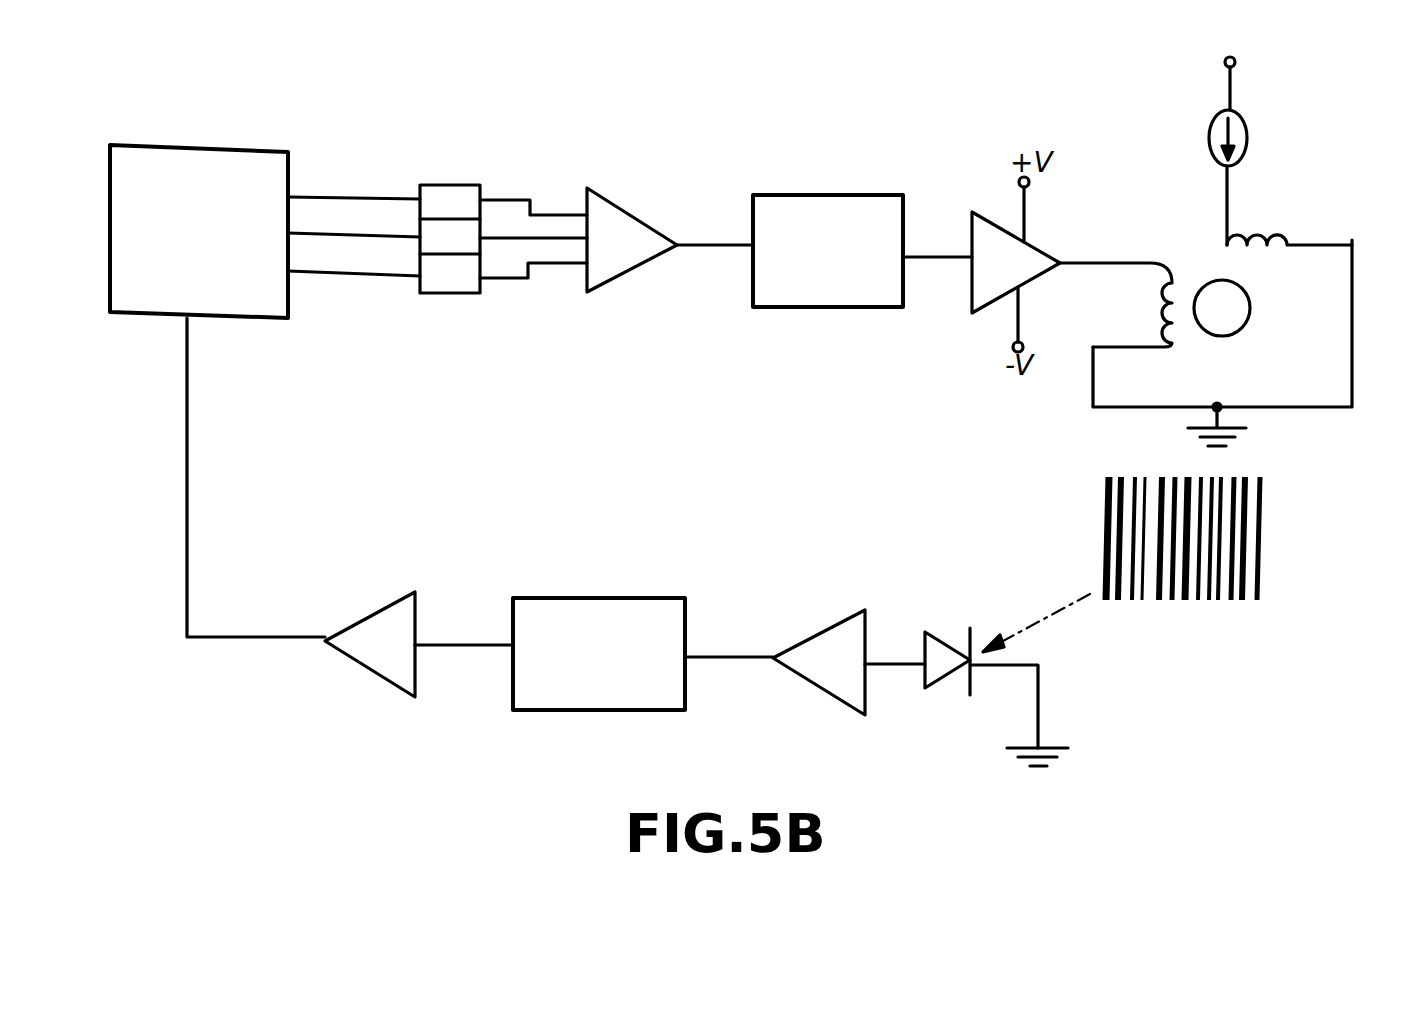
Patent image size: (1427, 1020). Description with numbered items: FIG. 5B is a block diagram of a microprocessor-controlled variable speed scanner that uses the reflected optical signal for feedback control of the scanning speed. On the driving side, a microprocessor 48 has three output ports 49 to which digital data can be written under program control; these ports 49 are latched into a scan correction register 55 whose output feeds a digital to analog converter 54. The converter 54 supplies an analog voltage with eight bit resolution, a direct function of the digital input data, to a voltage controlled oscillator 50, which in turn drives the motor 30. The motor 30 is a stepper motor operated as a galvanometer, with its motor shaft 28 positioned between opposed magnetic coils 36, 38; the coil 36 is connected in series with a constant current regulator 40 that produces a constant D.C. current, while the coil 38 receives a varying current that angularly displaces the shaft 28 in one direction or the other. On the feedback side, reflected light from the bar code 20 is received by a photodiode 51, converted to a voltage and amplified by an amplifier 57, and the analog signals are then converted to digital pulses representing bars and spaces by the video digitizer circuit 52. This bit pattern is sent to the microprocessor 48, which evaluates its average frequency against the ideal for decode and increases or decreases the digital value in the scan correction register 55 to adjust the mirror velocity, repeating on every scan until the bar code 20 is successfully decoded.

The microprocessor 48 is at (247, 148).
The output ports 49 is at (350, 278).
The scan correction register 55 is at (448, 185).
The digital to analog converter 54 is at (624, 206).
The voltage controlled oscillator 50 is at (858, 196).
The constant current regulator 40 is at (1247, 140).
The coil 36 is at (1260, 238).
The motor shaft 28 is at (1250, 310).
The coil 38 is at (1172, 323).
The motor 30 is at (1340, 358).
The video digitizer circuit 52 is at (628, 598).
The amplifier 57 is at (855, 614).
The photodiode 51 is at (935, 636).
The bar code 20 is at (1240, 626).